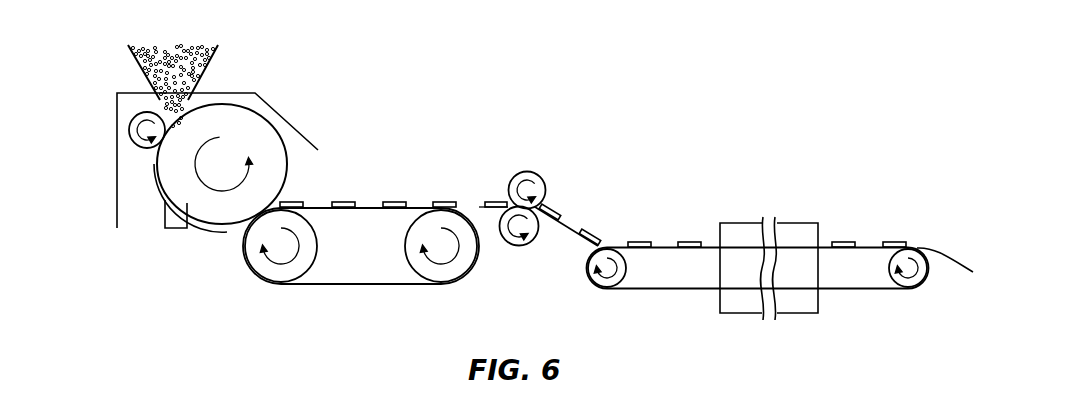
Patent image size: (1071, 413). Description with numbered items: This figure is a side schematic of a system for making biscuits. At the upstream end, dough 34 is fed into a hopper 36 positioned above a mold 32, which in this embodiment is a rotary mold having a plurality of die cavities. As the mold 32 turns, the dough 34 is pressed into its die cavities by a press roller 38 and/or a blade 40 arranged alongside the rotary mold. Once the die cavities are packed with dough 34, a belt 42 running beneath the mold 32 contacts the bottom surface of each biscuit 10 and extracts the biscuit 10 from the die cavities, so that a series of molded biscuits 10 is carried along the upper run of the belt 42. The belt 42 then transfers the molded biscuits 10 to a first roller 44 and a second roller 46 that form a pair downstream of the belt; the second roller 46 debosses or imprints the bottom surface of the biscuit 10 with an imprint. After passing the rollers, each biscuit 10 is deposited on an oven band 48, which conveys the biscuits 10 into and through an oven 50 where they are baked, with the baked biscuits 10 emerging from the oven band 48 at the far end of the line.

The biscuit 10 is at (345, 202).
The mold 32 is at (273, 113).
The dough 34 is at (173, 50).
The hopper 36 is at (143, 67).
The press roller 38 is at (130, 128).
The blade 40 is at (156, 183).
The belt 42 is at (360, 284).
The first roller 44 is at (537, 173).
The second roller 46 is at (520, 245).
The oven band 48 is at (668, 292).
The oven 50 is at (793, 223).